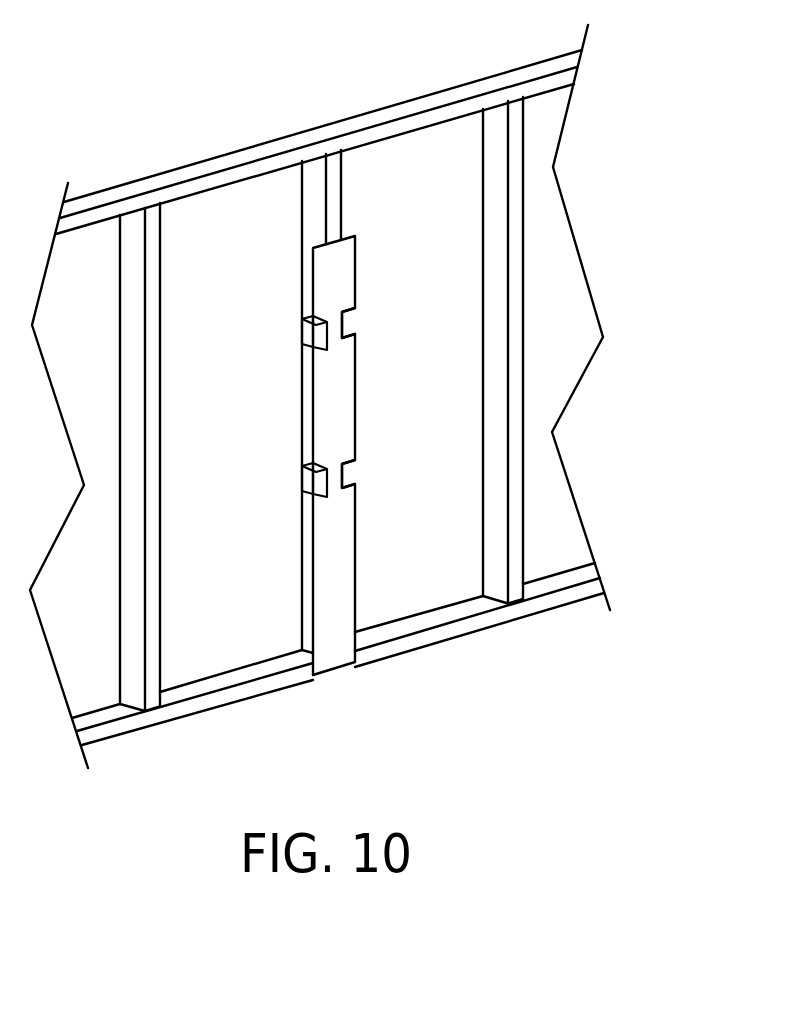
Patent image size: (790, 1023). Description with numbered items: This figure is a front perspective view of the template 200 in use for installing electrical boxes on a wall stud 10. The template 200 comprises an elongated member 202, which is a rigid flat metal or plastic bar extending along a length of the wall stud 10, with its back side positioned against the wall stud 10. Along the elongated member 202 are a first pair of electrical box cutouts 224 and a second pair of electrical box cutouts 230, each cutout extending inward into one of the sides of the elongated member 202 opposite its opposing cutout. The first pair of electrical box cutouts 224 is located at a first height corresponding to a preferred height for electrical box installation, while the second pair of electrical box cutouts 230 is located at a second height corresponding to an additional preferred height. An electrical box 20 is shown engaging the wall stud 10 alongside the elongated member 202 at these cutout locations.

The wall stud 10 is at (336, 208).
The electrical box 20 is at (304, 341).
The template 200 is at (557, 296).
The elongated member 202 is at (377, 264).
The second pair of electrical box cutouts 230 is at (348, 325).
The first pair of electrical box cutouts 224 is at (347, 474).